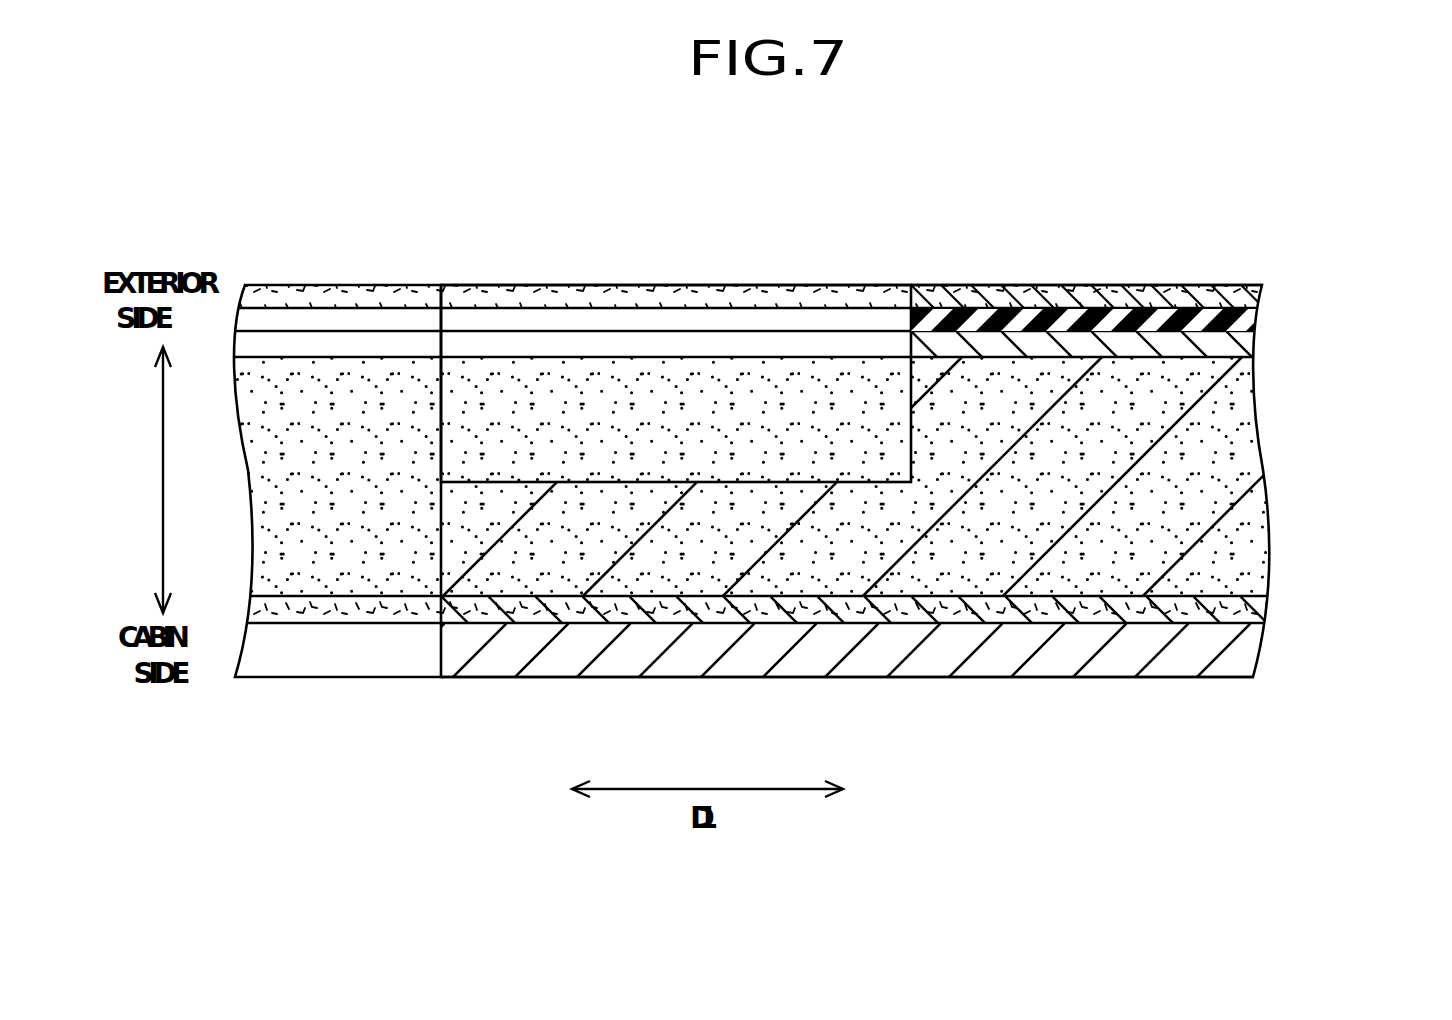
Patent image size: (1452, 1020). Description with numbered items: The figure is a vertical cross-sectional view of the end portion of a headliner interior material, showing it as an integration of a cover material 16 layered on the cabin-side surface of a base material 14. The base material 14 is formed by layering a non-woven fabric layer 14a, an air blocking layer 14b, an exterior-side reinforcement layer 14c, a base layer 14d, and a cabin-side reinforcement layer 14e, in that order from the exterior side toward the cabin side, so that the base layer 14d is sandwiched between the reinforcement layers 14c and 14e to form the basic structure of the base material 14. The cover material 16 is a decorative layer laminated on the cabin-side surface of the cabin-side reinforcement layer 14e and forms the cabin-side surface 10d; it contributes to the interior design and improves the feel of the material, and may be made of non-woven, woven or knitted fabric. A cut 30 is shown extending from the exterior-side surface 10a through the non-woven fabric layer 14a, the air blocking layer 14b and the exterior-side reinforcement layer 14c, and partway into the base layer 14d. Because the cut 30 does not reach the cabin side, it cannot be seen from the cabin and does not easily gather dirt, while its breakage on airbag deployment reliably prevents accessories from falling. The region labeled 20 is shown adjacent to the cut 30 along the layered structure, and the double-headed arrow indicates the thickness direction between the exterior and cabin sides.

The window glass body (laminated glass) 20 is at (366, 274).
The cut 30 is at (706, 276).
The exterior-side surface 10a is at (1118, 286).
The cabin-side surface 10d is at (1103, 678).
The base material 14 is at (941, 450).
The non-woven fabric layer 14a is at (1260, 299).
The air blocking layer 14b is at (1256, 325).
The exterior-side reinforcement layer 14c is at (1253, 350).
The base layer 14d is at (1266, 488).
The cabin-side reinforcement layer 14e is at (910, 590).
The cover material 16 is at (1262, 655).